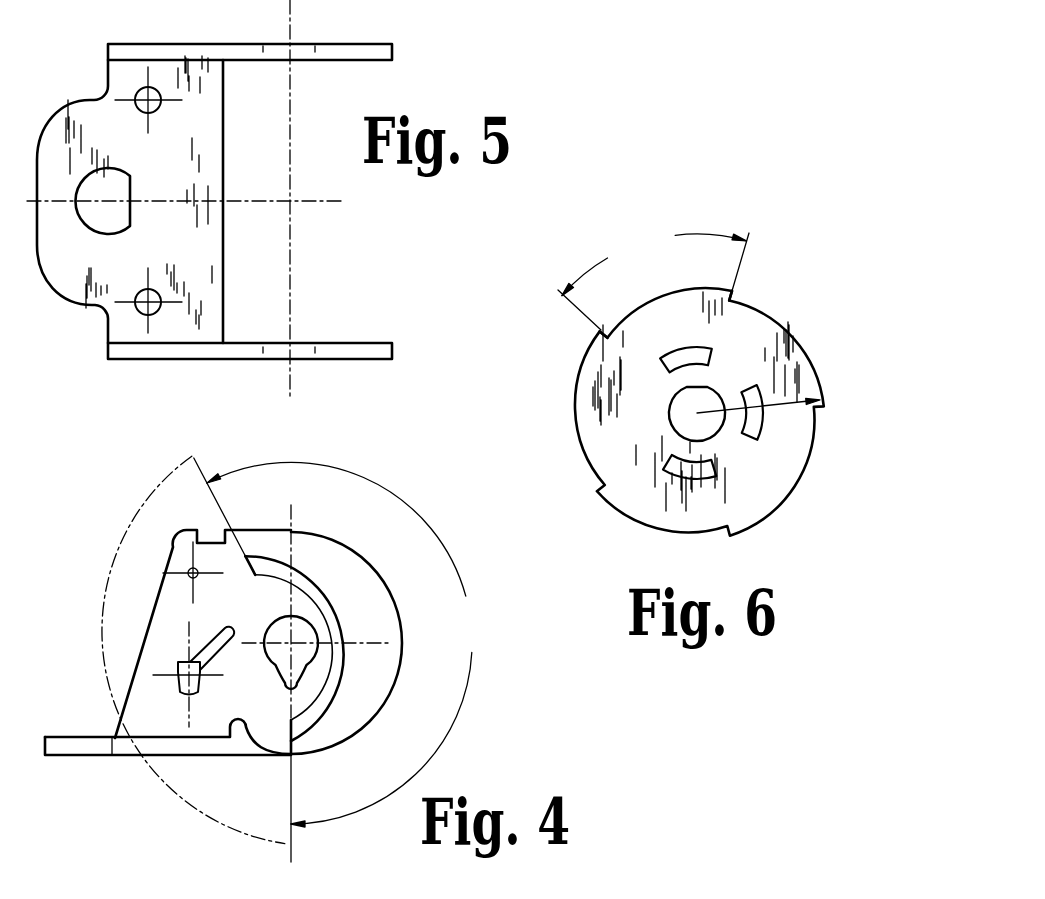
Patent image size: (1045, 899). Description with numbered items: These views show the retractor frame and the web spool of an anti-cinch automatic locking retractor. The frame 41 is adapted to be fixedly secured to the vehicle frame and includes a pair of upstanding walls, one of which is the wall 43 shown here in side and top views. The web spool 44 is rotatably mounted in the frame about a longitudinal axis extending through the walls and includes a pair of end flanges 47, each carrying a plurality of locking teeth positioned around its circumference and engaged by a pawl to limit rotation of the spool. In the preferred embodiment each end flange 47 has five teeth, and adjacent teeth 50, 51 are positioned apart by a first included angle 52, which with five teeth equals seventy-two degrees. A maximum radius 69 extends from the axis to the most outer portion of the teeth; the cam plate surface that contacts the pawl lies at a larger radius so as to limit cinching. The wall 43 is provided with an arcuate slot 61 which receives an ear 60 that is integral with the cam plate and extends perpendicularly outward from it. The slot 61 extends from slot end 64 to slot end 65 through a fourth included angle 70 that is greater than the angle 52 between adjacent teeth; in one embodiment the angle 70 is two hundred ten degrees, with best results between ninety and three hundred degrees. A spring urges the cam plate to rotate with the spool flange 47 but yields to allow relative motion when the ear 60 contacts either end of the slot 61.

In FIG. 5, the frame 41 is at (180, 75).
In FIG. 4, the frame 41 is at (67, 737).
In FIG. 4, the wall 43 is at (167, 617).
In FIG. 6, the web spool 44 is at (778, 228).
In FIG. 6, the end flange 47 is at (782, 345).
In FIG. 6, the tooth 50 is at (596, 335).
In FIG. 6, the tooth 51 is at (740, 292).
In FIG. 6, the first included angle 52 is at (653, 281).
In FIG. 4, the ear 60 is at (625, 892).
In FIG. 4, the arcuate slot 61 is at (337, 572).
In FIG. 4, the slot end 64 is at (297, 728).
In FIG. 4, the slot end 65 is at (263, 545).
In FIG. 6, the maximum radius 69 is at (778, 410).
In FIG. 4, the fourth included angle 70 is at (337, 642).